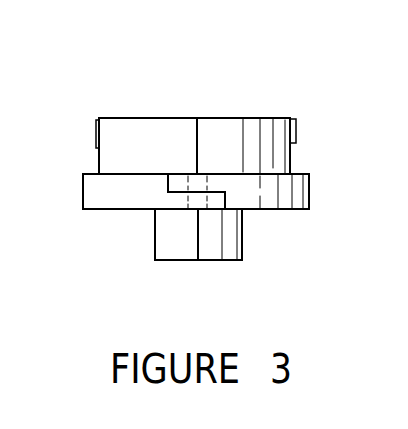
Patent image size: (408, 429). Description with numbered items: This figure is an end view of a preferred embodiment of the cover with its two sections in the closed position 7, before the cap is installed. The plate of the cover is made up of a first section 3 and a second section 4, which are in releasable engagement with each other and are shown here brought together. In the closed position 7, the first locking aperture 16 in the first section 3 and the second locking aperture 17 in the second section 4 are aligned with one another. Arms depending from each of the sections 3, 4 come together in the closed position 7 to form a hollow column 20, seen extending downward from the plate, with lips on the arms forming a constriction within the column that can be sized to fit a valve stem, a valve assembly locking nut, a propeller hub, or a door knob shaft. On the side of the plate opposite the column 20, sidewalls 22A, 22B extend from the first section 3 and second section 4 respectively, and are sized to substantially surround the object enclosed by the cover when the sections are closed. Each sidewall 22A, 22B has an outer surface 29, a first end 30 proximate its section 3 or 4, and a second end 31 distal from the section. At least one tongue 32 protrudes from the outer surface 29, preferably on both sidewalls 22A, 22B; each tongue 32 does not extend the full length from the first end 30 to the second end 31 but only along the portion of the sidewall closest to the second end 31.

The closed position 7 is at (325, 57).
The sidewall 22A is at (266, 132).
The sidewall 22B is at (177, 133).
The outer surface 29 is at (155, 133).
The second end 31 is at (110, 128).
The tongue 32 is at (95, 133).
The first end 30 is at (113, 170).
The first locking aperture 16 is at (200, 184).
The first section 3 is at (282, 195).
The second section 4 is at (92, 205).
The second locking aperture 17 is at (198, 212).
The hollow column 20 is at (240, 258).